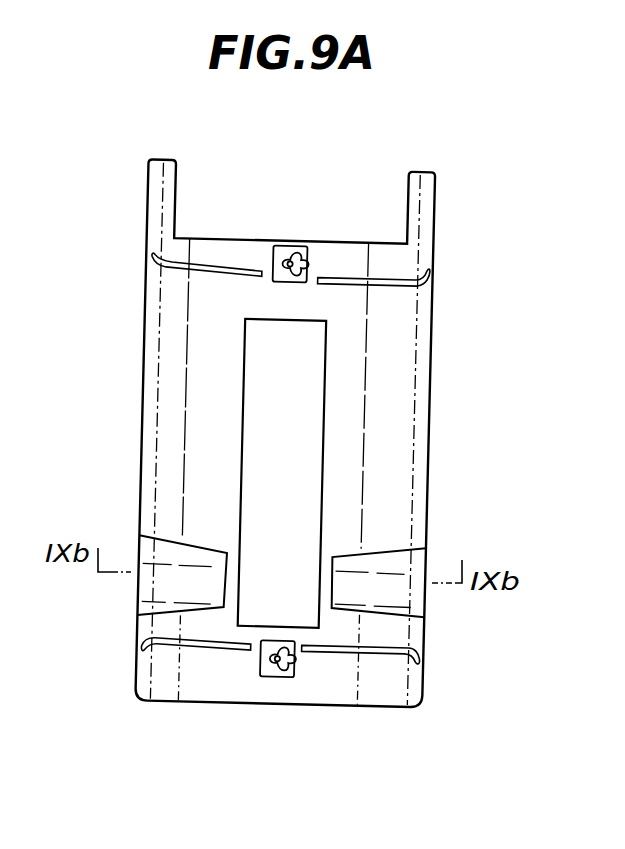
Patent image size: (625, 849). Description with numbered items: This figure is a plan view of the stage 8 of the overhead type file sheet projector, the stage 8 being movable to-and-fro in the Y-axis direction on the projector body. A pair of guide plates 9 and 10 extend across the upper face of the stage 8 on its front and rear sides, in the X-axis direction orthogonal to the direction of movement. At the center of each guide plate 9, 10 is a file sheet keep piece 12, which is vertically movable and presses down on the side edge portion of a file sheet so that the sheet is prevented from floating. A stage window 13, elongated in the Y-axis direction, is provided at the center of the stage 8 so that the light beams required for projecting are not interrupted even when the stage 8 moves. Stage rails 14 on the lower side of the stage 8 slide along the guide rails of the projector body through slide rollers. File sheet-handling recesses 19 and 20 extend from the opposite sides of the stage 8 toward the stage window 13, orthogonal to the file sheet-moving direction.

The stage 8 is at (380, 697).
The guide plate 9 is at (197, 645).
The guide plate 10 is at (410, 288).
The file sheet keep piece 12 is at (293, 250).
The stage window 13 is at (325, 428).
The stage rail 14 is at (142, 423).
The file sheet-handling recess 19 is at (167, 587).
The file sheet-handling recess 20 is at (395, 597).